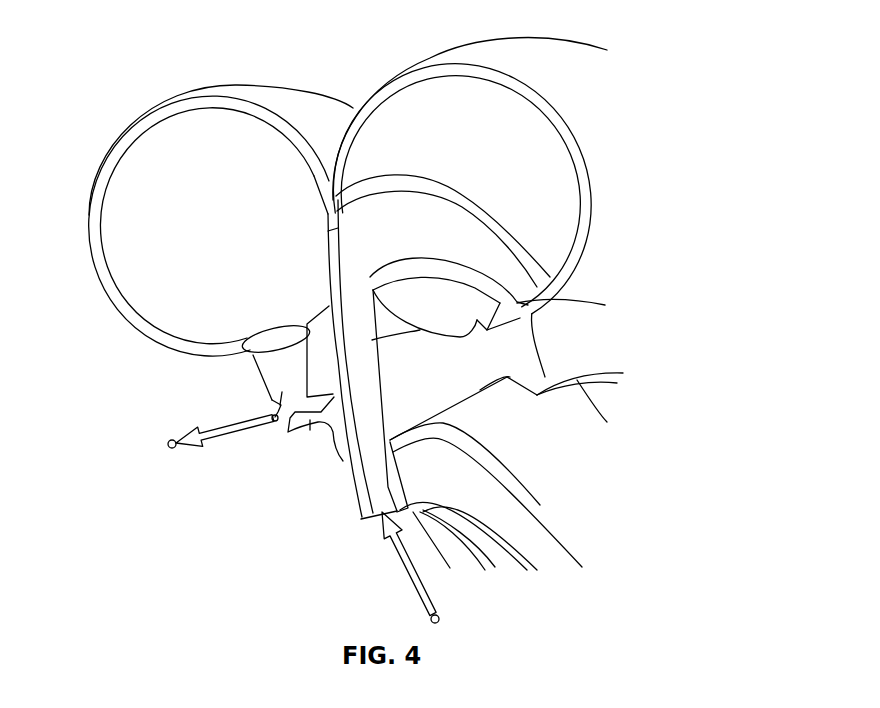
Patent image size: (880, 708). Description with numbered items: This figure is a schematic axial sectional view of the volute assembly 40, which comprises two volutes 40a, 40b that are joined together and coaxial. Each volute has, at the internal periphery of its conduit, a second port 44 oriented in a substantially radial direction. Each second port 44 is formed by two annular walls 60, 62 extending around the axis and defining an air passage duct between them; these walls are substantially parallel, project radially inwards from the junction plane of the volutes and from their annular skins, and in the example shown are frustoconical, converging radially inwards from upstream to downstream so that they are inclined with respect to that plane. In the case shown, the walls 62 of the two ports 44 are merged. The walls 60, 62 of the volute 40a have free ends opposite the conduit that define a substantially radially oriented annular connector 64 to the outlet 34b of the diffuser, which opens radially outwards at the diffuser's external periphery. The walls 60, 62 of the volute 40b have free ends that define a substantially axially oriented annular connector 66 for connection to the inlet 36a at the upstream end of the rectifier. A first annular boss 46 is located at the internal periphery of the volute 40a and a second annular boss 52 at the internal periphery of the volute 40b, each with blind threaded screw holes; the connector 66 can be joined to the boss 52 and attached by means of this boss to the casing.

The volute assembly 40 is at (652, 60).
The volute 40a is at (520, 53).
The volute 40b is at (245, 97).
The annular wall 62 is at (328, 290).
The annular wall 60 is at (306, 324).
The second port 44 is at (347, 350).
The second annular boss 52 is at (272, 423).
The connector 66 is at (297, 430).
The connector 64 is at (358, 513).
The first annular boss 46 is at (435, 400).
The inlet 36a is at (170, 448).
The outlet 34b is at (440, 616).